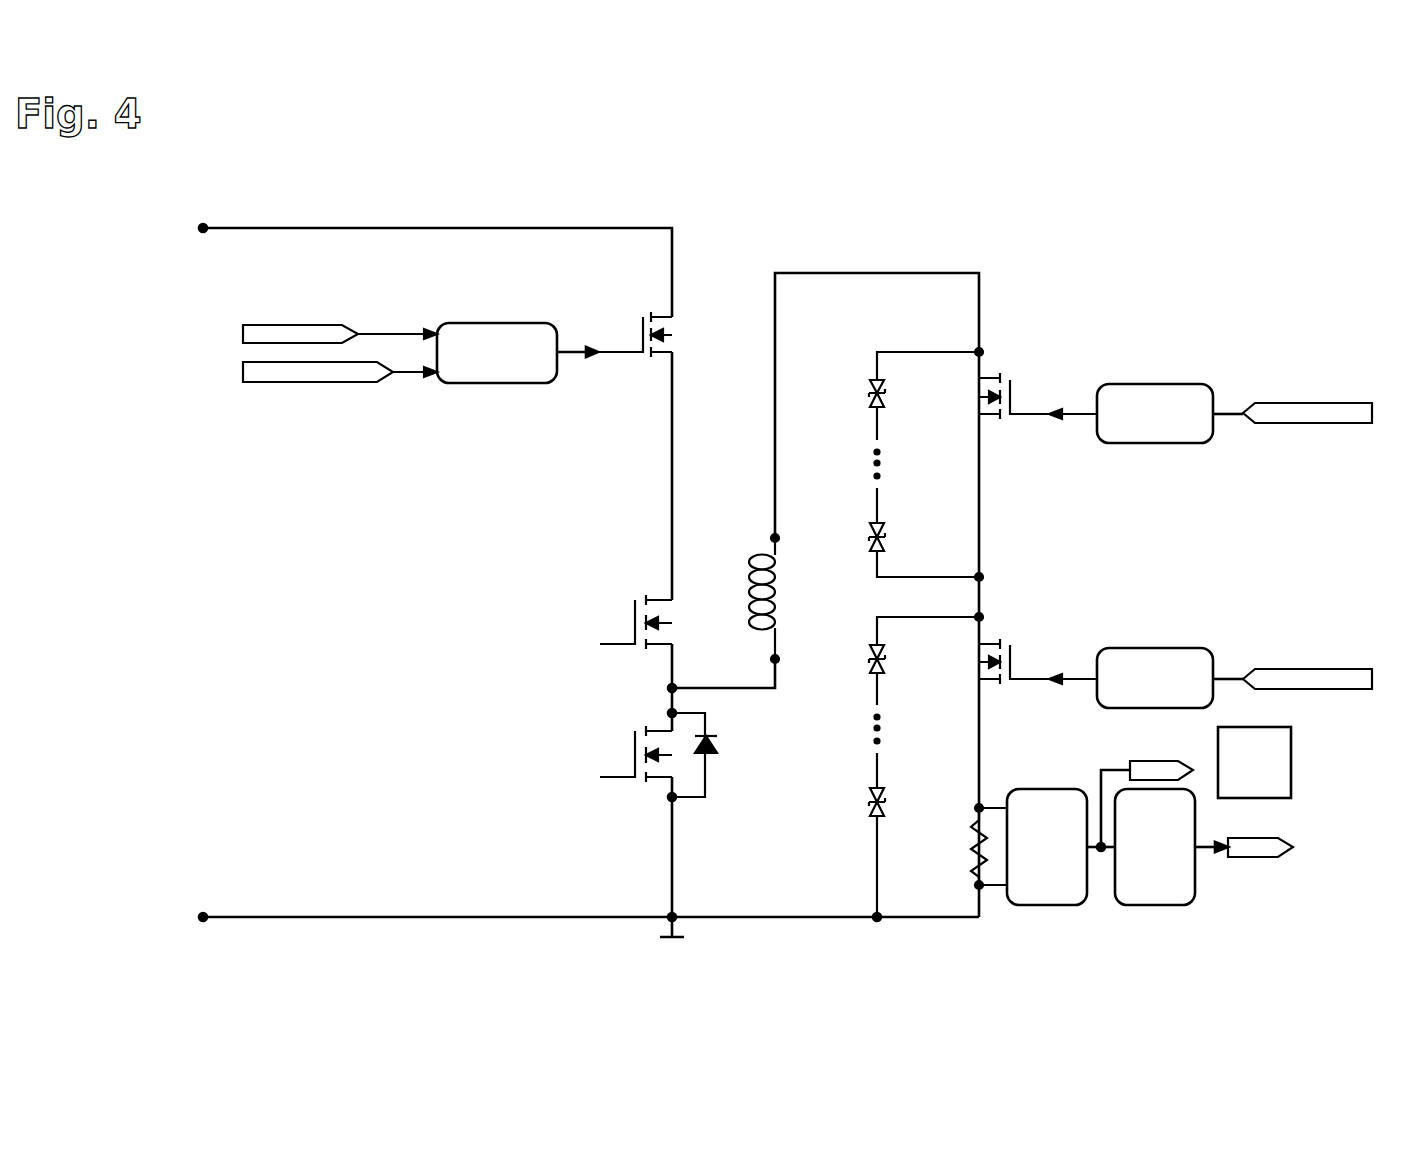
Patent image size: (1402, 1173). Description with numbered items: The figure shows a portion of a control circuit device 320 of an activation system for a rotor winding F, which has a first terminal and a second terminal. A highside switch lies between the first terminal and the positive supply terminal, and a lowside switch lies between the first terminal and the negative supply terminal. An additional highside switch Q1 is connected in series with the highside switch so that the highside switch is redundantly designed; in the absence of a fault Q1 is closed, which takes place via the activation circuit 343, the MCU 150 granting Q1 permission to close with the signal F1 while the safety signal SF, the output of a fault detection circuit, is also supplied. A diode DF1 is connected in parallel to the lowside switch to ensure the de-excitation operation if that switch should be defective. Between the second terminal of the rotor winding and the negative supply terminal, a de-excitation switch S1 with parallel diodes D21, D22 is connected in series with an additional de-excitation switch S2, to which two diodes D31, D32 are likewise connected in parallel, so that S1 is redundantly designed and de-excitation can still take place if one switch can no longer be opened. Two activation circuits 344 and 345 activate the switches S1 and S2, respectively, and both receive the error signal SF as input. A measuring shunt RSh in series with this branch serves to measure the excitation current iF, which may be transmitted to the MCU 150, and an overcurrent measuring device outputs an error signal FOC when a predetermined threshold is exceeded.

The control circuit device 320 is at (341, 751).
The activation circuit 343 is at (501, 323).
The activation circuit 344 is at (1157, 647).
The activation circuit 345 is at (1157, 383).
The MCU 150 is at (1292, 756).
The safety signal SF is at (296, 324).
The signal F1 is at (292, 383).
The additional highside switch Q1 is at (635, 334).
The diode DF1 is at (724, 755).
The rotor winding F is at (760, 596).
The diode D31 is at (904, 394).
The diode D32 is at (904, 516).
The diode D21 is at (904, 659).
The diode D22 is at (855, 816).
The de-excitation switch S1 is at (1038, 661).
The additional de-excitation switch S2 is at (1038, 396).
The measuring shunt RSh is at (968, 846).
The excitation current iF is at (1160, 757).
The error signal FOC is at (1265, 860).